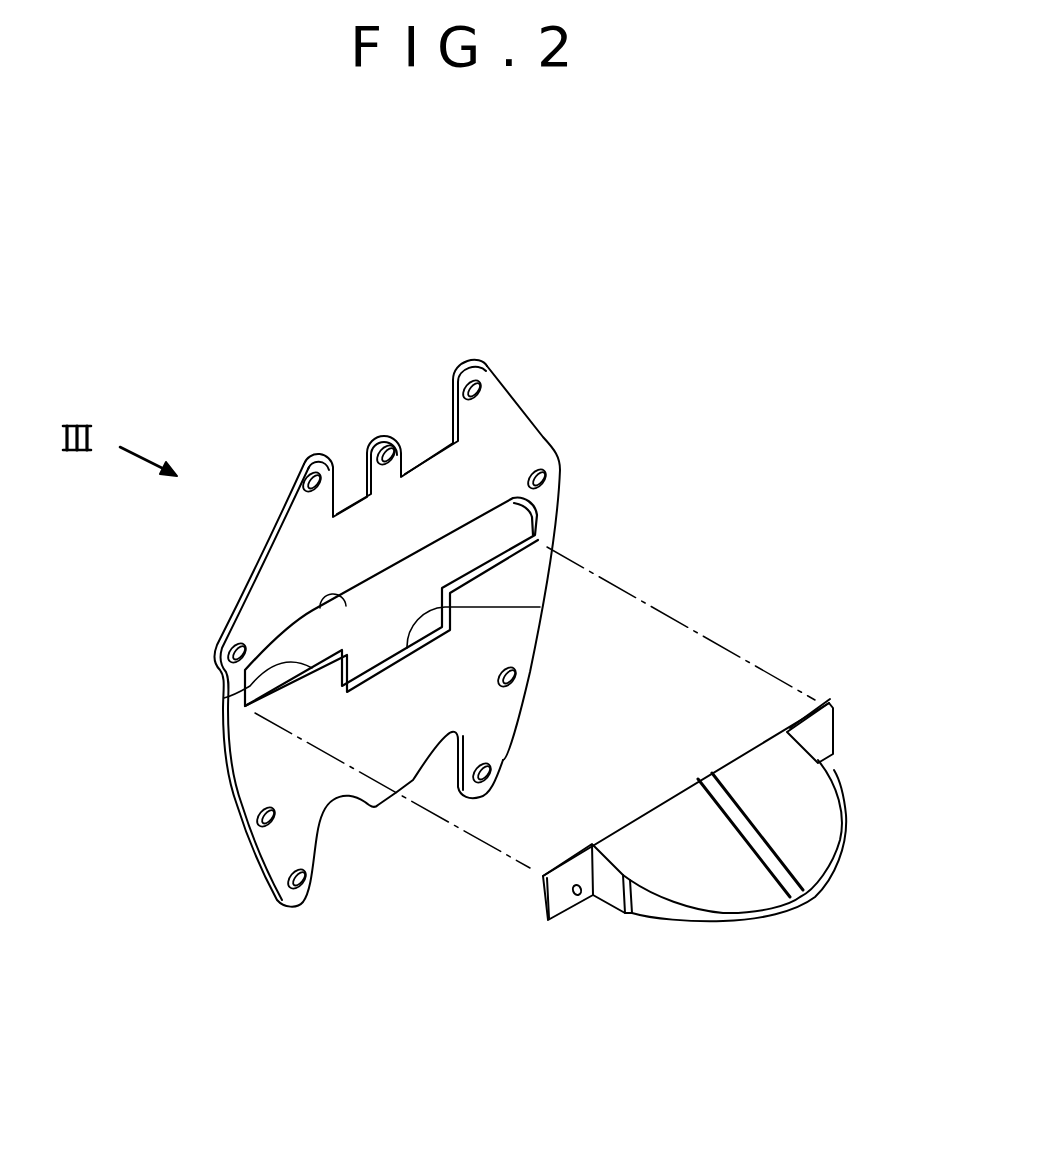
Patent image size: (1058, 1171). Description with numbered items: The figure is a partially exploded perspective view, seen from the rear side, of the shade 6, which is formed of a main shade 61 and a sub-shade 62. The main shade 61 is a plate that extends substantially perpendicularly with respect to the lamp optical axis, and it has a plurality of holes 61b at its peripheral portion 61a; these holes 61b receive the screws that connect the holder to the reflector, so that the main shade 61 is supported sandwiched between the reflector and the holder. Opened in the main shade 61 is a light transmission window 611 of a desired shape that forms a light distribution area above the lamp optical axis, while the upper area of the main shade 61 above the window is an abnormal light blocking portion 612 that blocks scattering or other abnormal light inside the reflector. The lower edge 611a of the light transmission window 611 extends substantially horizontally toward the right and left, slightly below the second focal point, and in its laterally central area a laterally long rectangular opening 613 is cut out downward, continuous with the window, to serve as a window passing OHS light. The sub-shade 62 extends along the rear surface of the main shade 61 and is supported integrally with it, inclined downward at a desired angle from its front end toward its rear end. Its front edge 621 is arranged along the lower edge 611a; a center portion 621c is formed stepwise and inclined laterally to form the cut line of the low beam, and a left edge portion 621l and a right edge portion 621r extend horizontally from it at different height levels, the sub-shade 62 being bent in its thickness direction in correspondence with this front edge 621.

The shade 6 is at (676, 470).
The main shade 61 is at (238, 817).
The light transmission window 611 is at (320, 608).
The lower edge 611a is at (224, 698).
The abnormal light blocking portion 612 is at (360, 553).
The opening 613 is at (540, 607).
The peripheral portion 61a is at (525, 426).
The holes 61b is at (516, 681).
The sub-shade 62 is at (767, 903).
The front edge 621 is at (700, 770).
The center portion 621c is at (692, 778).
The left edge portion 621l is at (742, 758).
The right edge portion 621r is at (631, 821).